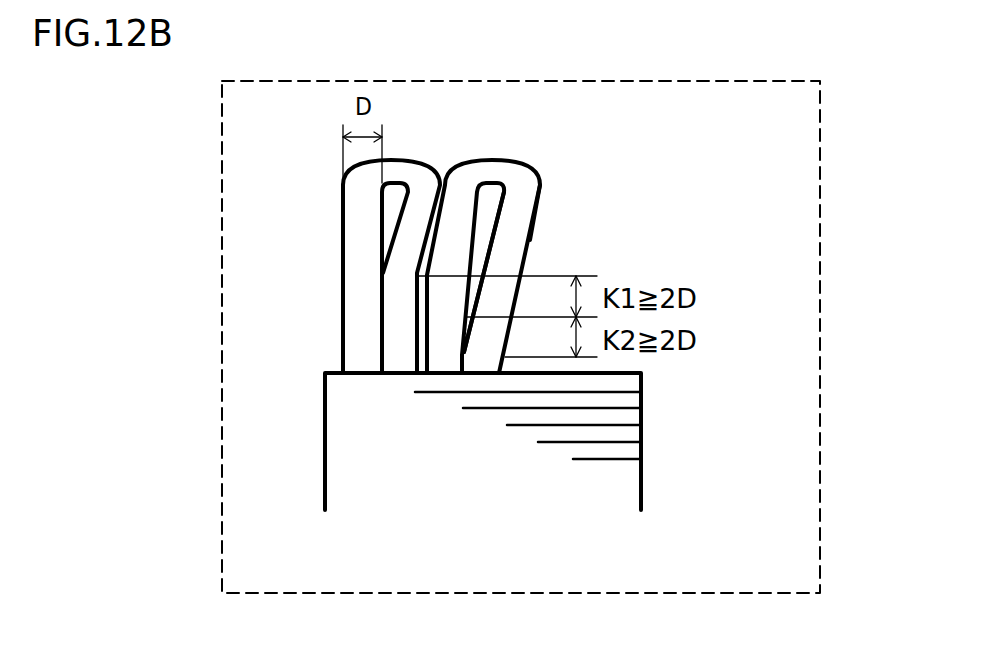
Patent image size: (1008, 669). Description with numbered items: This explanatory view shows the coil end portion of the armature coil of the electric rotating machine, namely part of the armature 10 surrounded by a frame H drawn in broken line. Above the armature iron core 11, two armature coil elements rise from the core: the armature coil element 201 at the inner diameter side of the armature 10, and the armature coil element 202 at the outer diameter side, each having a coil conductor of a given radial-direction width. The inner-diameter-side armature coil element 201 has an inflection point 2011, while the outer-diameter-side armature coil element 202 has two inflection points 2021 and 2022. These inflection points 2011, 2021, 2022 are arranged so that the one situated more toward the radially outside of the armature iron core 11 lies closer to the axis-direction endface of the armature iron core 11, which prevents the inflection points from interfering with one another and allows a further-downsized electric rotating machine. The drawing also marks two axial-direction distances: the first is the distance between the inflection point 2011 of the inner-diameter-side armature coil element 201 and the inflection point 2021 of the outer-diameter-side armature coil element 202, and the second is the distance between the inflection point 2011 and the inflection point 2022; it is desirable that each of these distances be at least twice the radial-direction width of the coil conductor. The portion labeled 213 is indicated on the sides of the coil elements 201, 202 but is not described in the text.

The armature 10 is at (521, 317).
The armature iron core 11 is at (643, 401).
The armature coil element at the inner diameter side 201 is at (319, 240).
The armature coil element at the outer diameter side 202 is at (491, 317).
The fin side face 213 is at (341, 203).
The inflection point 2011 is at (420, 277).
The inflection point 2021 is at (463, 321).
The inflection point 2022 is at (502, 357).
The frame H is at (822, 252).